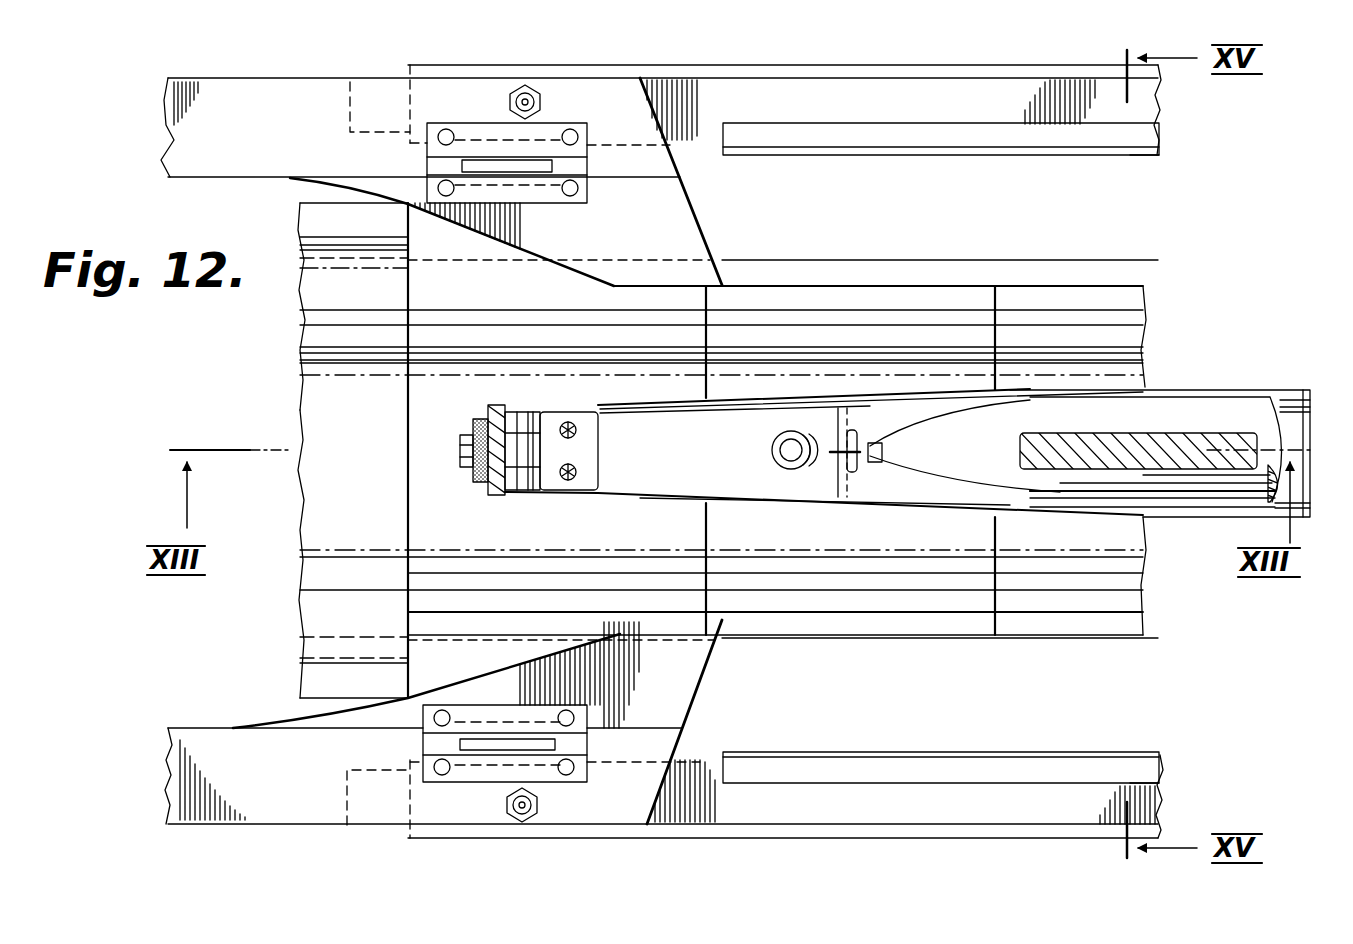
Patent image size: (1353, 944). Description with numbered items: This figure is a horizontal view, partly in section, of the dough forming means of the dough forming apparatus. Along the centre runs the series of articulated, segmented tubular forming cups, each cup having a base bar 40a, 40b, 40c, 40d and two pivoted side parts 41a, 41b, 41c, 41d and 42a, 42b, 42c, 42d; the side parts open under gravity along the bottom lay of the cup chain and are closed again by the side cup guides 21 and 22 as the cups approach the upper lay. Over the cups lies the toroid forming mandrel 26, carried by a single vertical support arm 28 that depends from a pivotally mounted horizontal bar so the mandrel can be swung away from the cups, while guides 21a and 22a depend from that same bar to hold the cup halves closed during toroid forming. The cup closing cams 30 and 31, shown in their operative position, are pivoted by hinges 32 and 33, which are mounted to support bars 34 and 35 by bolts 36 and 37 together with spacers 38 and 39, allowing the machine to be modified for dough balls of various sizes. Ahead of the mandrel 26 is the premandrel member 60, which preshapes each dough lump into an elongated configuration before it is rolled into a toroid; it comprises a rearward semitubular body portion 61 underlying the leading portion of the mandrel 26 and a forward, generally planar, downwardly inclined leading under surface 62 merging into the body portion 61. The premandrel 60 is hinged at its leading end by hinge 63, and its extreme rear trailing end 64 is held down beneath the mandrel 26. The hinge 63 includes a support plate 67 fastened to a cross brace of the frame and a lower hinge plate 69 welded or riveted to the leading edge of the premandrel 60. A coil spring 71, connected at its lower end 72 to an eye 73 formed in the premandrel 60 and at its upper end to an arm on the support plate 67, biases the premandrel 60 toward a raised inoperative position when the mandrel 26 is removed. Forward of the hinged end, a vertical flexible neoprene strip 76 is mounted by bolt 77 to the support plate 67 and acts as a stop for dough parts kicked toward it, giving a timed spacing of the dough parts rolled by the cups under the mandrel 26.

The side cup guide 21 is at (945, 792).
The guide 21a is at (1140, 752).
The side cup guide 22 is at (1150, 95).
The guide 22a is at (1140, 160).
The toroid forming mandrel 26 is at (1165, 484).
The vertical support arm 28 is at (1195, 436).
The cup closing cam 30 is at (695, 192).
The cup closing cam 31 is at (672, 710).
The hinge 32 is at (522, 190).
The hinge 33 is at (545, 712).
The support bar 34 is at (200, 128).
The support bar 35 is at (200, 770).
The bolt 36 is at (510, 99).
The bolt 37 is at (537, 805).
The spacer 38 is at (350, 118).
The spacer 39 is at (352, 795).
The base bar 40a is at (325, 412).
The base bar 40b is at (435, 382).
The base bar 40c is at (855, 382).
The base bar 40d is at (1112, 372).
The side part 41a is at (325, 325).
The side part 41b is at (665, 292).
The side part 41c is at (965, 292).
The side part 41d is at (1088, 292).
The side part 42a is at (325, 573).
The side part 42b is at (515, 600).
The side part 42c is at (955, 600).
The side part 42d is at (1105, 600).
The premandrel member 60 is at (826, 517).
The rearward semitubular body portion 61 is at (770, 482).
The leading under surface 62 is at (610, 492).
The hinge 63 is at (525, 418).
The rear trailing end 64 is at (1298, 494).
The support plate 67 is at (496, 496).
The lower hinge plate 69 is at (598, 448).
The coil spring 71 is at (772, 446).
The lower end 72 is at (836, 470).
The eye 73 is at (882, 442).
The flexible neoprene strip 76 is at (482, 482).
The bolt 77 is at (460, 451).